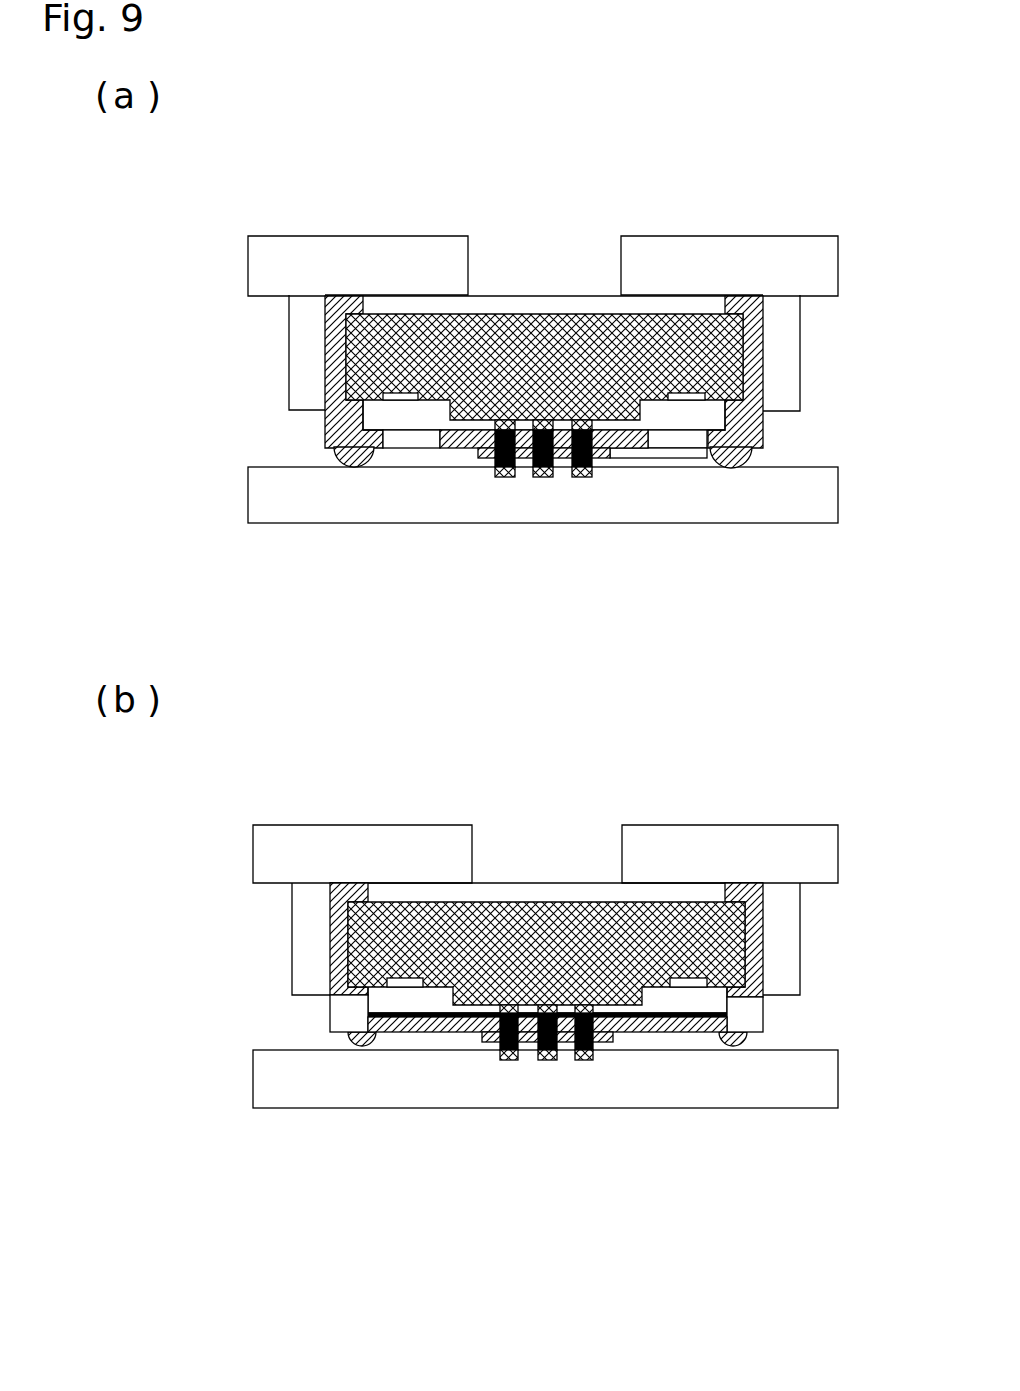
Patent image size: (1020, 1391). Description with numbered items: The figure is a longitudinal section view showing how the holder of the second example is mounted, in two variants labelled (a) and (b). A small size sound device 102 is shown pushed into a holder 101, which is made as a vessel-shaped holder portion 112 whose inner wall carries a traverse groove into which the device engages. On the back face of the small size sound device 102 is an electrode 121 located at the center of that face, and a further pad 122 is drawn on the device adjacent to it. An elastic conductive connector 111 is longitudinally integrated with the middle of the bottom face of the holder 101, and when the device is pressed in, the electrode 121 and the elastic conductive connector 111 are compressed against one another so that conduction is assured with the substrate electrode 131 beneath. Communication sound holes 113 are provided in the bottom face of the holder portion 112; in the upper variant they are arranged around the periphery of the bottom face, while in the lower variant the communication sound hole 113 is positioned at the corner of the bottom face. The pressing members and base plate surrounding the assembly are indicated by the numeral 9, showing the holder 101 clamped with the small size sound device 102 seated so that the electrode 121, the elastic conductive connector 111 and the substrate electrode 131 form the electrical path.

The pressing jig / mounting apparatus 9 is at (238, 224).
The holder 101 is at (298, 447).
The small size sound device 102 is at (528, 350).
The elastic conductive connector 111 is at (593, 457).
The holder portion 112 is at (763, 370).
The communication sound hole 113 is at (410, 440).
The electrode 121 is at (593, 420).
The electrode pad 122 is at (687, 400).
The substrate electrode 131 is at (593, 457).